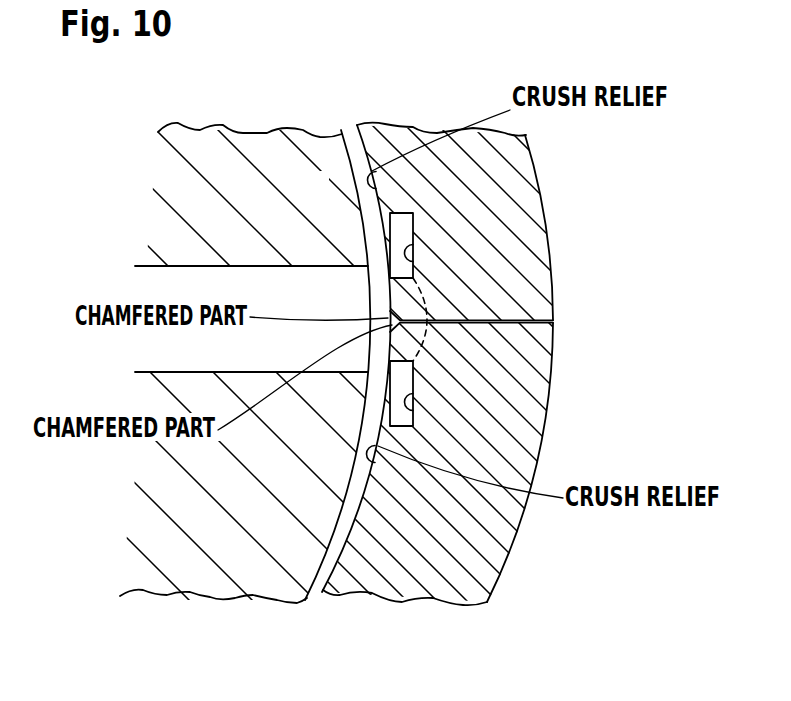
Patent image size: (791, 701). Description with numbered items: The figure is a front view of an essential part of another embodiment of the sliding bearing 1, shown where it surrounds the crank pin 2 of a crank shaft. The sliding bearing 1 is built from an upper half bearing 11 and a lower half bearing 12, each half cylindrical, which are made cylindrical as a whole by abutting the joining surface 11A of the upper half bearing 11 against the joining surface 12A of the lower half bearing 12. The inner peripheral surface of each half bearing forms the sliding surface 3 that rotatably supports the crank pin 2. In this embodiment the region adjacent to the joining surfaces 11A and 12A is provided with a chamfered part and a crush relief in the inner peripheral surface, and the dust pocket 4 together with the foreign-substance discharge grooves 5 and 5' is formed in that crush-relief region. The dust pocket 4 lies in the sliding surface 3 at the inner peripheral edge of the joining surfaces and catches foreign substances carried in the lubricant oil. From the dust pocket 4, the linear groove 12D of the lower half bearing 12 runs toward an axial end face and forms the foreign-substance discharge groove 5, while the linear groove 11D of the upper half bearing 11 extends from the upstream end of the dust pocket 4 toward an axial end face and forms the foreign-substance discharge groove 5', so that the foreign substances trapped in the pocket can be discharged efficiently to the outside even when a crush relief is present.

The sliding bearing 1 is at (574, 207).
The crank pin 2 is at (288, 148).
The sliding surface 3 is at (330, 573).
The dust pocket 4 is at (390, 297).
The foreign-substance discharge groove 5 is at (350, 399).
The foreign-substance discharge groove 5' is at (356, 225).
The upper half bearing 11 is at (503, 187).
The joining surface 11A is at (498, 322).
The linear groove 11D is at (414, 262).
The lower half bearing 12 is at (530, 441).
The joining surface 12A is at (470, 320).
The linear groove 12D is at (414, 407).